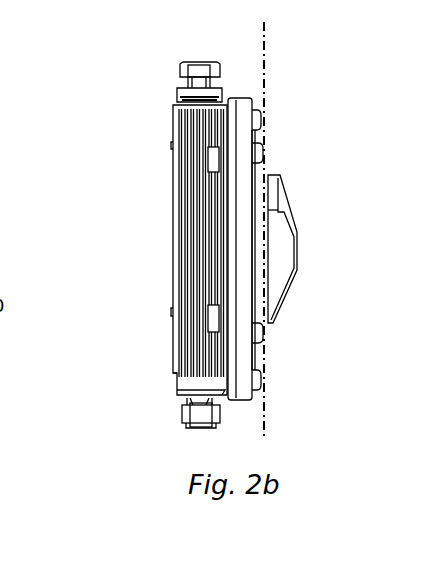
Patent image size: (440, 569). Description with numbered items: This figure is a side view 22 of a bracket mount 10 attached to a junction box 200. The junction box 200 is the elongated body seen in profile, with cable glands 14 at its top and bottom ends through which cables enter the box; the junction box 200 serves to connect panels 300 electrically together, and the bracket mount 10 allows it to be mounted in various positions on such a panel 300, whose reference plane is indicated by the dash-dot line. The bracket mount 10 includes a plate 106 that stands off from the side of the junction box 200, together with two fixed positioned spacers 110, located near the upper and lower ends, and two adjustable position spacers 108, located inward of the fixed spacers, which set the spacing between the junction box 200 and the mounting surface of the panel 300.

The bracket mount 10 is at (252, 402).
The cable gland 14 is at (180, 72).
The side view 22 is at (133, 407).
The plate 106 is at (287, 200).
The adjustable position spacer 108 is at (263, 163).
The fixed positioned spacer 110 is at (261, 120).
The junction box 200 is at (175, 216).
The panel 300 is at (265, 52).